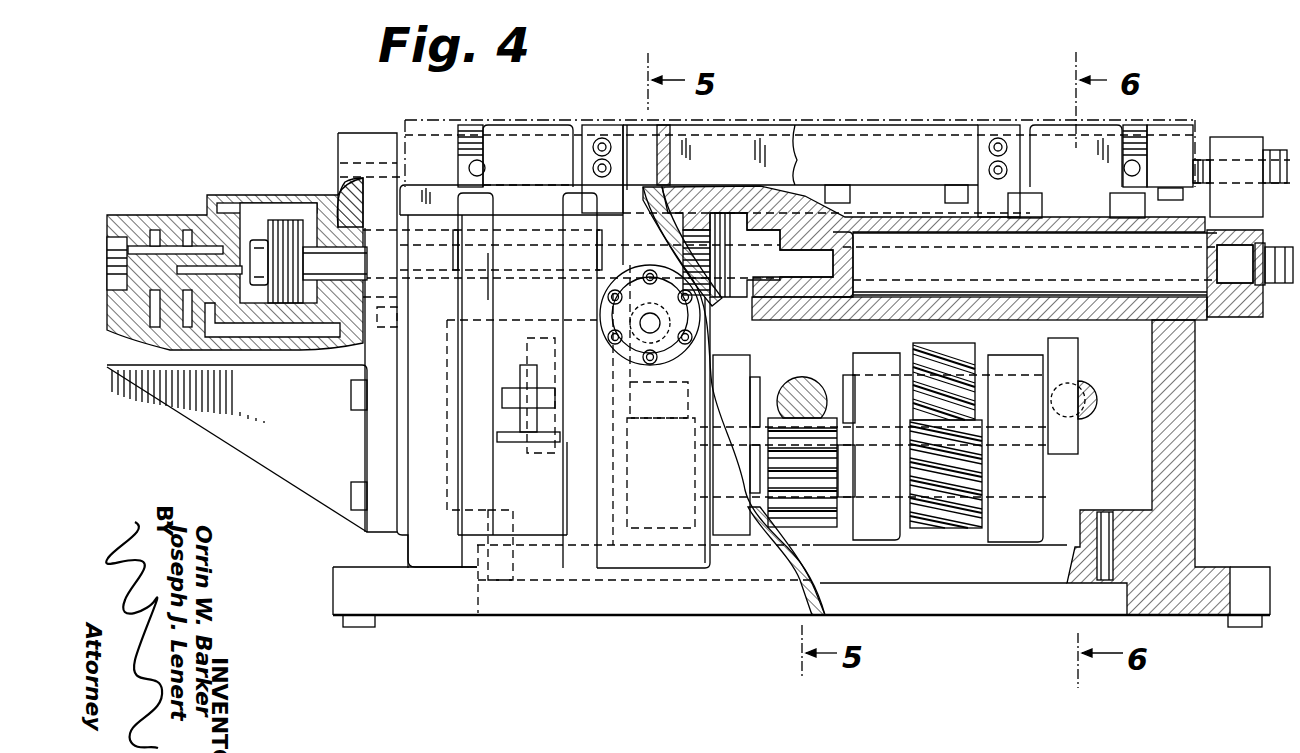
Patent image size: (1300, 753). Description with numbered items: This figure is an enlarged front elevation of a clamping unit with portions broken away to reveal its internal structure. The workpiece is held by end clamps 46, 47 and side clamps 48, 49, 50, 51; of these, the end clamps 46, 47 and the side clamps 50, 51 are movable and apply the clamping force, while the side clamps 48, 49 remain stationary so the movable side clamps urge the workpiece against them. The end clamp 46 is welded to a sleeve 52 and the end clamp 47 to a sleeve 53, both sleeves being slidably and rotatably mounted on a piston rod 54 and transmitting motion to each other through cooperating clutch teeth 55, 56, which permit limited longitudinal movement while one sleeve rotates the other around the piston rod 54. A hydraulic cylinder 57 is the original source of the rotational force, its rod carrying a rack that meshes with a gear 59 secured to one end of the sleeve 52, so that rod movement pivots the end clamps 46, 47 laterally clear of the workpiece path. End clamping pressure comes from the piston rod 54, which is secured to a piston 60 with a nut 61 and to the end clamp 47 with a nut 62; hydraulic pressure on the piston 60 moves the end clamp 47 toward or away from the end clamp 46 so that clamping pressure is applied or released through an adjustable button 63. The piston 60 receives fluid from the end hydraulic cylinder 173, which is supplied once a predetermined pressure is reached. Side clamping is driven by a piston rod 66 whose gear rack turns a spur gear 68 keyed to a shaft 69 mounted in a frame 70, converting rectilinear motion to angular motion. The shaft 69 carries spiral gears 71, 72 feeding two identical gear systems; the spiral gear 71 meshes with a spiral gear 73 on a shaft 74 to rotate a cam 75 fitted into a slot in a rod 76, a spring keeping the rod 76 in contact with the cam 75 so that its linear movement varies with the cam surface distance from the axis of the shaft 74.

The end clamp 46 is at (363, 137).
The end clamp 47 is at (1230, 138).
The side clamp 48 is at (472, 128).
The side clamp 49 is at (1142, 128).
The side clamp 50 is at (518, 137).
The side clamp 51 is at (1097, 150).
The sleeve 52 is at (338, 185).
The sleeve 53 is at (1230, 295).
The piston rod 54 is at (1230, 260).
The clutch teeth 55 is at (763, 262).
The clutch teeth 56 is at (780, 227).
The hydraulic cylinder 57 is at (700, 322).
The gear 59 is at (696, 240).
The piston 60 is at (285, 220).
The nut 61 is at (1263, 247).
The nut 62 is at (1280, 262).
The adjustable button 63 is at (1198, 157).
The piston rod 66 is at (803, 388).
The spur gear 68 is at (825, 528).
The shaft 69 is at (868, 462).
The frame 70 is at (732, 365).
The spiral gear 71 is at (958, 528).
The spiral gear 72 is at (667, 528).
The spiral gear 73 is at (945, 343).
The shaft 74 is at (840, 385).
The cam 75 is at (1070, 353).
The rod 76 is at (1095, 395).
The end hydraulic cylinder 173 is at (207, 195).